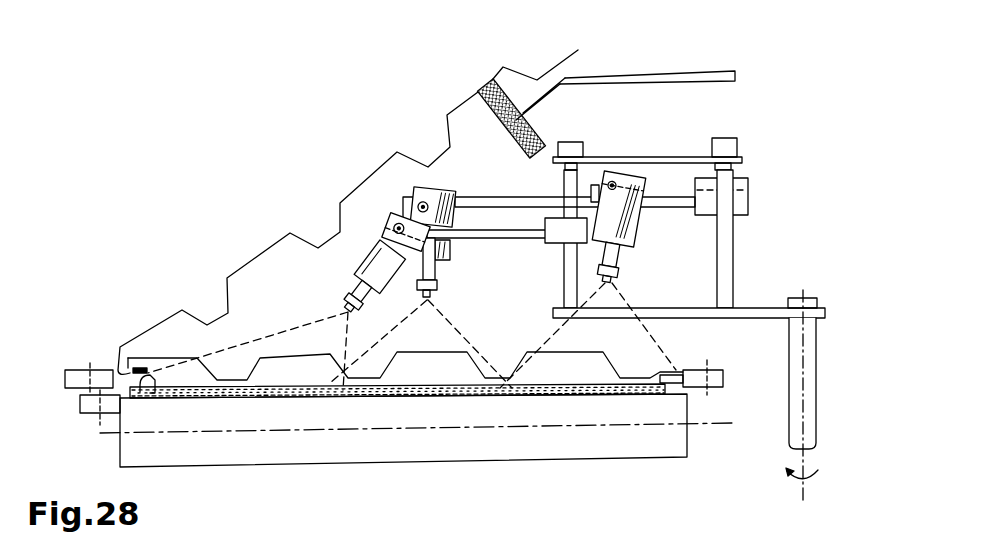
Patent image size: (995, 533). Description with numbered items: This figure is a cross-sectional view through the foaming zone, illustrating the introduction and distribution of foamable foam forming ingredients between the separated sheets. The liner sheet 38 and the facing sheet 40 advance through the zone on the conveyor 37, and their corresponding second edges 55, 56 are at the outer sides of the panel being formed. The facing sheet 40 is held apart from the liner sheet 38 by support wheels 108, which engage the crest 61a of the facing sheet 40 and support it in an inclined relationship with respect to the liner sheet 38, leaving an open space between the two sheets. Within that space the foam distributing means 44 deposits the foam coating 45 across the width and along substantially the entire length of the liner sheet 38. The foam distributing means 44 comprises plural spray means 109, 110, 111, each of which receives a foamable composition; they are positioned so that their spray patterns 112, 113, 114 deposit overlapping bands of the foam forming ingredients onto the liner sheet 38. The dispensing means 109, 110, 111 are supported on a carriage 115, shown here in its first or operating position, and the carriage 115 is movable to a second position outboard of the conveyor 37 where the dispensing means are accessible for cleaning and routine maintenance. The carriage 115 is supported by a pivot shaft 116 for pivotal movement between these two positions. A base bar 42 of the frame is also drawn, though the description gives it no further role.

The conveyor 37 is at (607, 460).
The liner sheet 38 is at (123, 421).
The facing sheet 40 is at (358, 177).
The base bar of spray frame 42 is at (680, 336).
The foam distributing means 44 is at (765, 150).
The foam coating 45 is at (421, 389).
The second edge 55 is at (678, 372).
The second edge 56 is at (584, 55).
The crest 61a is at (500, 72).
The support wheels 108 is at (530, 127).
The spray means 109 is at (376, 232).
The spray means 110 is at (457, 182).
The spray means 111 is at (622, 170).
The spray pattern 112 is at (302, 326).
The spray pattern 113 is at (446, 315).
The spray pattern 114 is at (622, 297).
The carriage 115 is at (740, 305).
The pivot shaft 116 is at (813, 399).